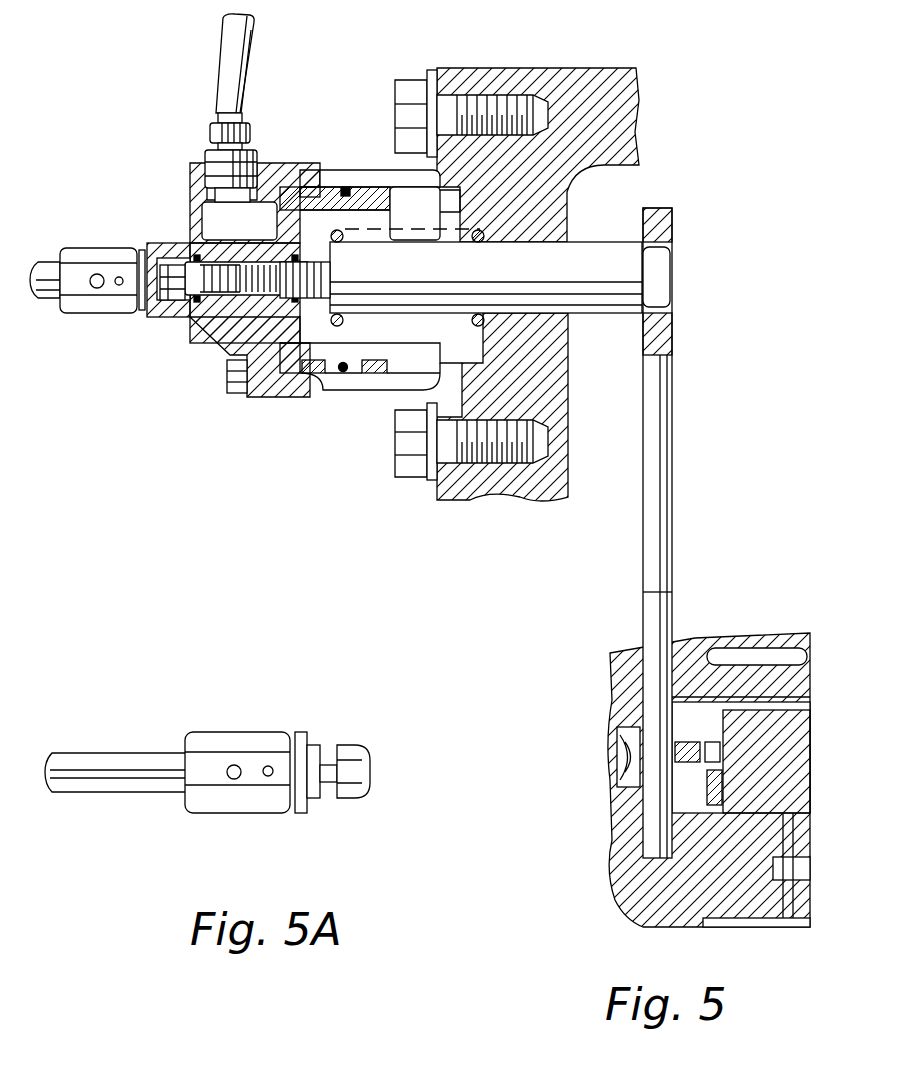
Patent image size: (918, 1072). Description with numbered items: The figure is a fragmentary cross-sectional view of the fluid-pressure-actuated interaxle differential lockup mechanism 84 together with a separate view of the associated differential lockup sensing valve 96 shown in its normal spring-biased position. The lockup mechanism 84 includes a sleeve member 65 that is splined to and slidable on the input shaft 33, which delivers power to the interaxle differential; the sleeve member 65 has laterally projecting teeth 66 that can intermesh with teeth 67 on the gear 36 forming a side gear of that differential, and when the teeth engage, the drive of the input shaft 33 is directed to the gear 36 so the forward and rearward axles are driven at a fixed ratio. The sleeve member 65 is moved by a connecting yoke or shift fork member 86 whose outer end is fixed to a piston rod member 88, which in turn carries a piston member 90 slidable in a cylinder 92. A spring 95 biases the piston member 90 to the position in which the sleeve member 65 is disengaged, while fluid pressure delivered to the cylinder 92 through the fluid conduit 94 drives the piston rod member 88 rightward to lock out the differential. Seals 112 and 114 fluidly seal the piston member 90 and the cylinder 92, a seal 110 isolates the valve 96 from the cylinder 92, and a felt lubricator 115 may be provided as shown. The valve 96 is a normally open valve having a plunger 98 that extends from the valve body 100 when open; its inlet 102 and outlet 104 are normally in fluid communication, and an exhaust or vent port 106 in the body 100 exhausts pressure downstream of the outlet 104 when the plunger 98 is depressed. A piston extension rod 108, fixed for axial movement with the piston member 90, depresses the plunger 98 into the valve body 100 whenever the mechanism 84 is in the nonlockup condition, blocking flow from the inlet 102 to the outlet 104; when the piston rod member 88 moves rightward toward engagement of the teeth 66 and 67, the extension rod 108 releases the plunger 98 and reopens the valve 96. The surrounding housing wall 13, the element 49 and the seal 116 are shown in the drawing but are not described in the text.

In FIG. 5, the housing wall 13 is at (607, 78).
In FIG. 5, the input shaft 33 is at (717, 900).
In FIG. 5, the gear 36 is at (790, 773).
In FIG. 5, the pin 49 is at (690, 793).
In FIG. 5, the sleeve member 65 is at (688, 743).
In FIG. 5, the teeth 66 is at (764, 663).
In FIG. 5, the teeth 67 is at (717, 750).
In FIG. 5, the interaxle differential lockup mechanism 84 is at (378, 72).
In FIG. 5, the shift fork member 86 is at (666, 405).
In FIG. 5, the piston rod member 88 is at (585, 250).
In FIG. 5, the piston member 90 is at (368, 187).
In FIG. 5, the cylinder 92 is at (395, 183).
In FIG. 5, the fluid conduit 94 is at (227, 133).
In FIG. 5, the spring 95 is at (341, 243).
In FIG. 5, the valve mechanism 96 is at (162, 215).
In FIG. 5, the plunger 98 is at (175, 290).
In FIG. 5A, the plunger 98 is at (368, 758).
In FIG. 5, the valve body 100 is at (112, 313).
In FIG. 5A, the valve body 100 is at (260, 742).
In FIG. 5, the inlet 102 is at (55, 296).
In FIG. 5A, the inlet 102 is at (122, 782).
In FIG. 5, the outlet 104 is at (97, 274).
In FIG. 5A, the outlet 104 is at (234, 780).
In FIG. 5, the exhaust or vent port 106 is at (120, 277).
In FIG. 5A, the exhaust or vent port 106 is at (268, 778).
In FIG. 5, the piston extension rod 108 is at (207, 288).
In FIG. 5, the seal 110 is at (200, 247).
In FIG. 5, the seal 112 is at (282, 190).
In FIG. 5, the seal 114 is at (345, 187).
In FIG. 5, the felt lubricator 115 is at (315, 378).
In FIG. 5, the seal 116 is at (343, 188).